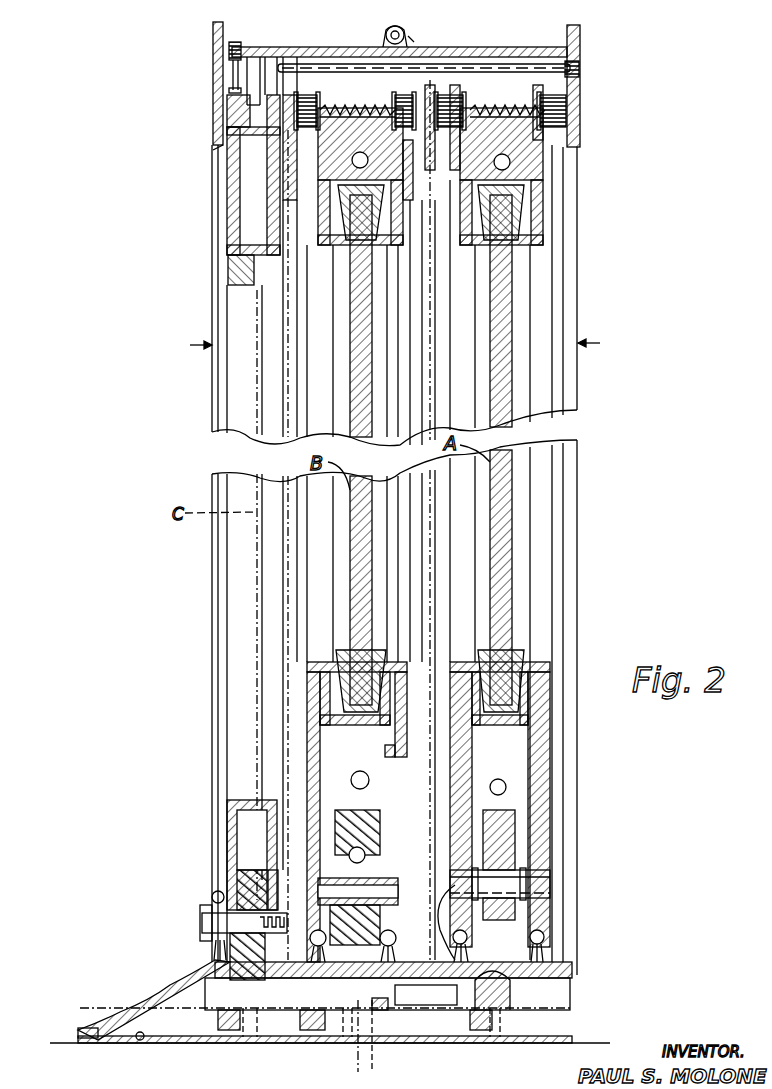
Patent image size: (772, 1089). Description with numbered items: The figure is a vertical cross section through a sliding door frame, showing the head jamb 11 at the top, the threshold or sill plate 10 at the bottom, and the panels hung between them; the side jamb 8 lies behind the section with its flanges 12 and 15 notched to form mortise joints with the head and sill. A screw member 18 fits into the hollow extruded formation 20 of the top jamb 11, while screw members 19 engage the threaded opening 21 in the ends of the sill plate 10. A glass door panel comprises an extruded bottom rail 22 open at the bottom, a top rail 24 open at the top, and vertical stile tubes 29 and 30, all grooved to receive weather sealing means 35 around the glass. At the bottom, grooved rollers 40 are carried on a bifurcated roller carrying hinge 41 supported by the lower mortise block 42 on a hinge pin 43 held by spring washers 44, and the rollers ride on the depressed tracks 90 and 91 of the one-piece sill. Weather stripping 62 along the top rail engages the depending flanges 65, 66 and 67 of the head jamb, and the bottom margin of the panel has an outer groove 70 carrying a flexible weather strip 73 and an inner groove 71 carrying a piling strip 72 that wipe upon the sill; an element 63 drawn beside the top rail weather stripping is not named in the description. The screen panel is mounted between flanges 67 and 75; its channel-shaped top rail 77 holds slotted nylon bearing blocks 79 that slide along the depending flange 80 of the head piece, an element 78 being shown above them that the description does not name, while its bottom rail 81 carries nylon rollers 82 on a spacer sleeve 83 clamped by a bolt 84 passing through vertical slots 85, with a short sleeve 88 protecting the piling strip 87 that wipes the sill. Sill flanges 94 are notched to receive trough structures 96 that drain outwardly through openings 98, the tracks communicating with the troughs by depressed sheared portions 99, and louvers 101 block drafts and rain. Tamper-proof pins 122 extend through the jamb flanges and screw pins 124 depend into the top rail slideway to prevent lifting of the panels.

The side jamb 8 is at (389, 344).
The threshold or sill plate 10 is at (160, 985).
The top jamb or head jamb 11 is at (508, 46).
The side jamb flange 12 is at (578, 310).
The side jamb flange 15 is at (216, 270).
The screw member 18 is at (398, 30).
The screw member 19 is at (426, 993).
The hollow extruded formation 20 is at (410, 32).
The threaded opening 21 is at (325, 584).
The bottom rail 22 is at (464, 660).
The top rail 24 is at (408, 205).
The vertical stile tube 29 is at (542, 497).
The vertical stile tube 30 is at (316, 562).
The weather sealing means 35 is at (527, 257).
The roller 40 is at (342, 780).
The roller carrying hinge 41 is at (502, 850).
The lower mortise block 42 is at (540, 812).
The hinge pin 43 is at (546, 888).
The spring washer 44 is at (548, 868).
The weather stripping 62 is at (312, 96).
The threaded shaft 63 is at (330, 82).
The depending flange 65 is at (578, 136).
The depending flange 66 is at (396, 160).
The depending flange 67 is at (290, 150).
The outer groove 70 is at (451, 918).
The inner groove 71 is at (550, 936).
The piling strip 72 is at (550, 945).
The flexible weather strip 73 is at (468, 945).
The flange 75 is at (213, 145).
The top rail of screen panel 77 is at (230, 218).
The cap 78 is at (283, 100).
The bearing block 79 is at (237, 99).
The depending flange 80 is at (255, 80).
The bottom rail of screen door panel 81 is at (236, 815).
The nylon roller 82 is at (240, 880).
The spacer sleeve 83 is at (242, 892).
The bolt 84 is at (206, 915).
The vertical slot 85 is at (215, 898).
The piling strip 87 is at (215, 952).
The short sleeve 88 is at (212, 900).
The depressed track 90 is at (373, 1044).
The depressed track 91 is at (512, 1002).
The sill flange 94 is at (248, 1045).
The trough structure 96 is at (172, 1045).
The opening 98 is at (85, 1034).
The depressed sheared portion 99 is at (580, 1022).
The louver 101 is at (140, 1040).
The pin 122 is at (580, 70).
The vertically depending screw pin 124 is at (230, 72).